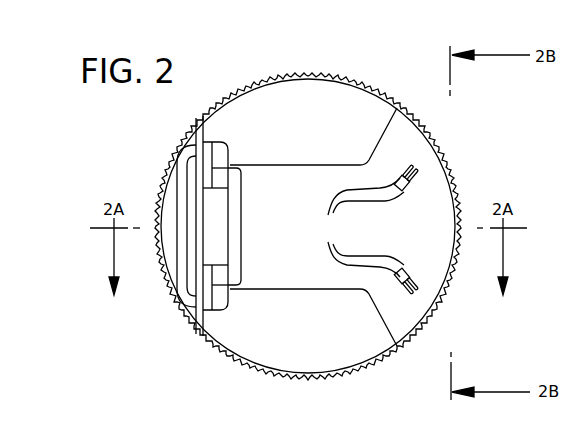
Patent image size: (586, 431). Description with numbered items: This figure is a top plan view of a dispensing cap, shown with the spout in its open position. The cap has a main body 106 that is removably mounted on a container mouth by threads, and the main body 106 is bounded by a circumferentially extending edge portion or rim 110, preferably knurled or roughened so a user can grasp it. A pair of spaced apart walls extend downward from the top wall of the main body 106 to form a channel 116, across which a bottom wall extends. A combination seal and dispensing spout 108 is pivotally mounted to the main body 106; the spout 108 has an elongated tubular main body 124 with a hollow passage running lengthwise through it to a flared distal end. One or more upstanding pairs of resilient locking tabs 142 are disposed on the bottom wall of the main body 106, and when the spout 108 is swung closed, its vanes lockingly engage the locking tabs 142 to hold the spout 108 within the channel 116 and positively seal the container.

The main body 106 is at (160, 188).
The combination seal and dispensing spout 108 is at (182, 147).
The rim 110 is at (447, 153).
The channel 116 is at (393, 152).
The tubular main body 124 is at (240, 228).
The locking tabs 142 is at (365, 229).